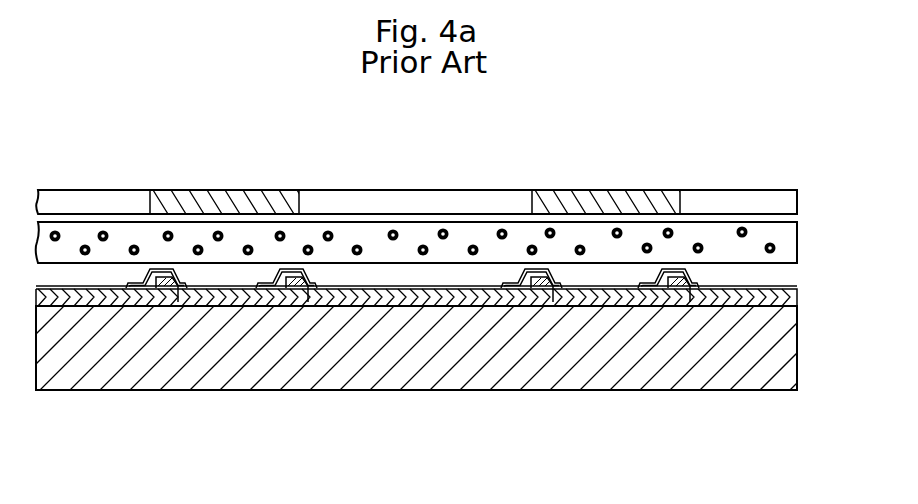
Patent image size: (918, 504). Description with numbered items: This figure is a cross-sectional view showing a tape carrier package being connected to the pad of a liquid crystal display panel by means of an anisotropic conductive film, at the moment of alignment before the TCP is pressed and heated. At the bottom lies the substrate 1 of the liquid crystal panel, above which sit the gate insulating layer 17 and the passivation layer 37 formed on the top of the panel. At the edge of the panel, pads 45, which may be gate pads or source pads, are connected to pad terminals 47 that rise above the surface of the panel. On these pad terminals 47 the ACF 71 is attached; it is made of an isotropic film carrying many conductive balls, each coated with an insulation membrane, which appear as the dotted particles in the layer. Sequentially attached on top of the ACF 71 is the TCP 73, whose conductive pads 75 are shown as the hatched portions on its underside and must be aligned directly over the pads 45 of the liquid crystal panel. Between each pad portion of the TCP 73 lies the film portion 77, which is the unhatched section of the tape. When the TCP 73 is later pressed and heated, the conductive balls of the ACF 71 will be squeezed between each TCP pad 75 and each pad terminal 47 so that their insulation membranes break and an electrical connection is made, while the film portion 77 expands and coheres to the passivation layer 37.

The substrate 1 is at (752, 377).
The gate insulating layer 17 is at (337, 307).
The passivation layer 37 is at (445, 285).
The pad 45 is at (218, 307).
The pad terminal 47 is at (160, 272).
The ACF 71 is at (803, 222).
The TCP 73 is at (440, 164).
The conductive pad 75 is at (605, 195).
The film portion 77 is at (325, 197).